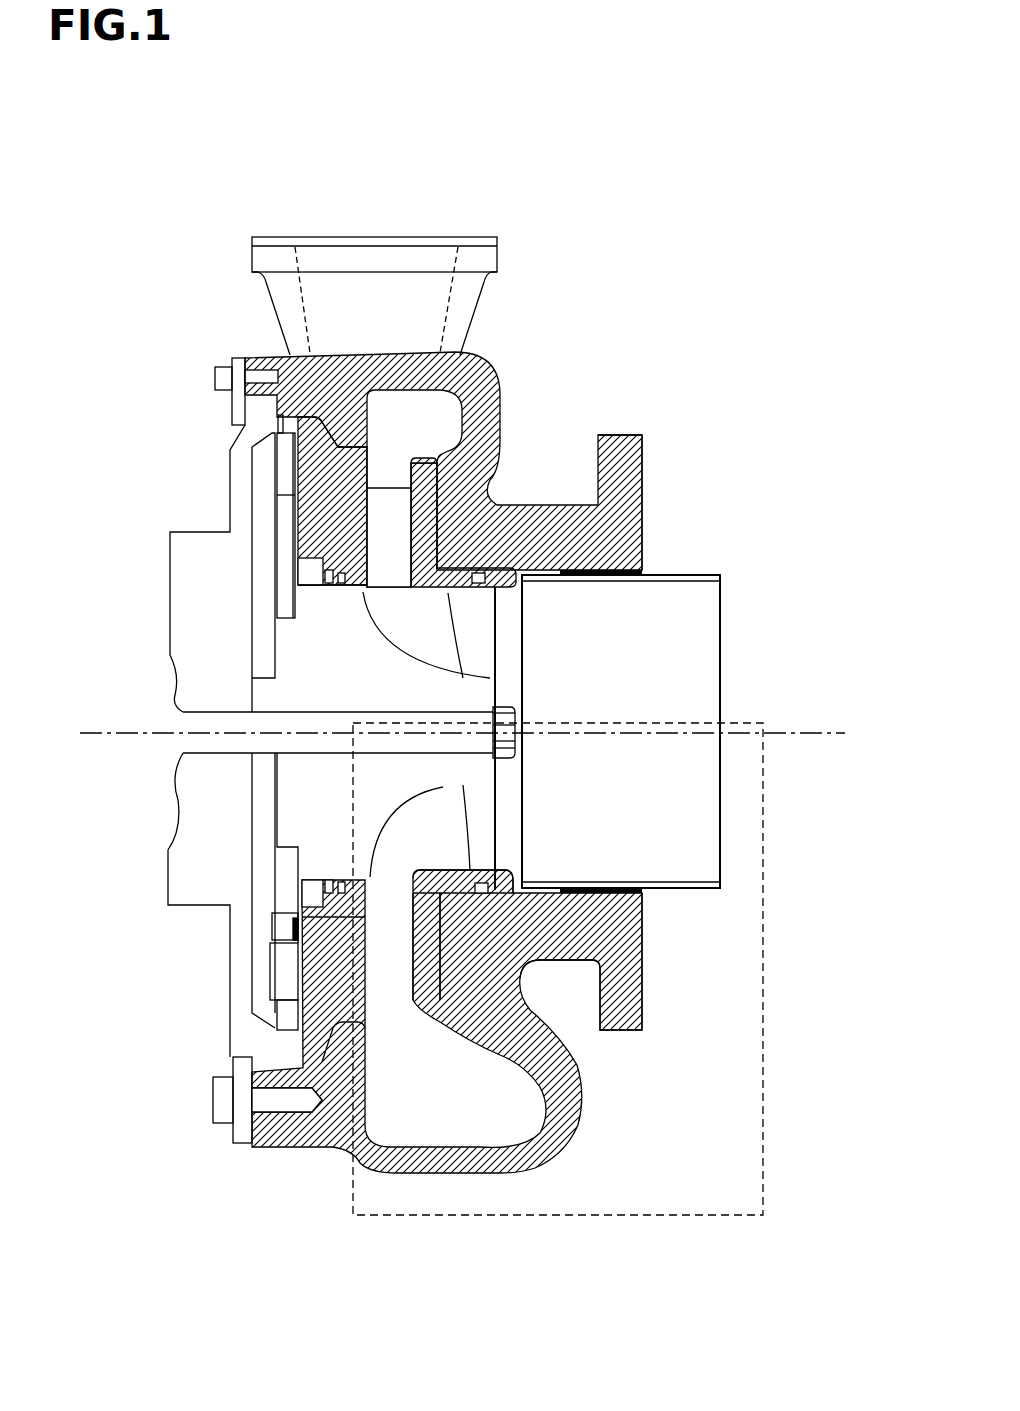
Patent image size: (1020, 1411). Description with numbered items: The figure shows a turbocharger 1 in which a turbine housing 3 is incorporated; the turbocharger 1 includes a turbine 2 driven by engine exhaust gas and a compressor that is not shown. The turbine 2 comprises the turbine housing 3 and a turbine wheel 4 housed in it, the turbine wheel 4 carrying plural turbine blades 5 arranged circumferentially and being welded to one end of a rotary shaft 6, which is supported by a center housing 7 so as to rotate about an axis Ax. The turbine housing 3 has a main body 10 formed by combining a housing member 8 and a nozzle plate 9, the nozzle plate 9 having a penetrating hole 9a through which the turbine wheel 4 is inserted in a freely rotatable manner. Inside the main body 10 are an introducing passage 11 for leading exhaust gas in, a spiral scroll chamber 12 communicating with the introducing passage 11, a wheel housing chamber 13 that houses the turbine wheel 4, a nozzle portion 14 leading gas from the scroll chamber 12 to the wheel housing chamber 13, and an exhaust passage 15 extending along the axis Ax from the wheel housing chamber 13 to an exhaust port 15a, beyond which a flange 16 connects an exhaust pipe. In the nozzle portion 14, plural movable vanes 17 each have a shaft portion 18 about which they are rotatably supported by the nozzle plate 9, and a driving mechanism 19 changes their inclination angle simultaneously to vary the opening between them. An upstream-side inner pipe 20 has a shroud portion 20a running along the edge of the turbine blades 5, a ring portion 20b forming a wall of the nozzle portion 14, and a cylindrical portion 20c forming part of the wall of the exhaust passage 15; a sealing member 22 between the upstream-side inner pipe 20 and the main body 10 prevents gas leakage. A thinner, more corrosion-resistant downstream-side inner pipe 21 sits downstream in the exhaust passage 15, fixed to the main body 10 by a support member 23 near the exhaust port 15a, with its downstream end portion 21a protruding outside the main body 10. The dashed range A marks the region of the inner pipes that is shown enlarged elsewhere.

The turbocharger 1 is at (108, 340).
The turbine 2 is at (425, 184).
The turbine housing 3 is at (544, 422).
The turbine wheel 4 is at (500, 630).
The turbine blades 5 is at (500, 613).
The rotary shaft 6 is at (218, 745).
The center housing 7 is at (170, 575).
The housing member 8 is at (310, 1147).
The nozzle plate 9 is at (247, 1143).
The penetrating hole 9a is at (325, 606).
The main body 10 is at (190, 1230).
The introducing passage 11 is at (358, 289).
The scroll chamber 12 is at (489, 1121).
The wheel housing chamber 13 is at (321, 805).
The nozzle portion 14 is at (394, 1018).
The exhaust passage 15 is at (595, 660).
The exhaust port 15a is at (654, 905).
The flange 16 is at (620, 1030).
The movable vanes 17 is at (388, 497).
The shaft portion 18 is at (327, 933).
The driving mechanism 19 is at (283, 955).
The upstream-side inner pipe 20 is at (430, 972).
The shroud portion 20a is at (440, 858).
The ring portion 20b is at (417, 937).
The cylindrical portion 20c is at (495, 878).
The downstream-side inner pipe 21 is at (700, 577).
The downstream end portion 21a is at (720, 873).
The sealing member 22 is at (480, 578).
The support member 23 is at (615, 560).
The range A is at (494, 1215).
The axis Ax is at (455, 772).